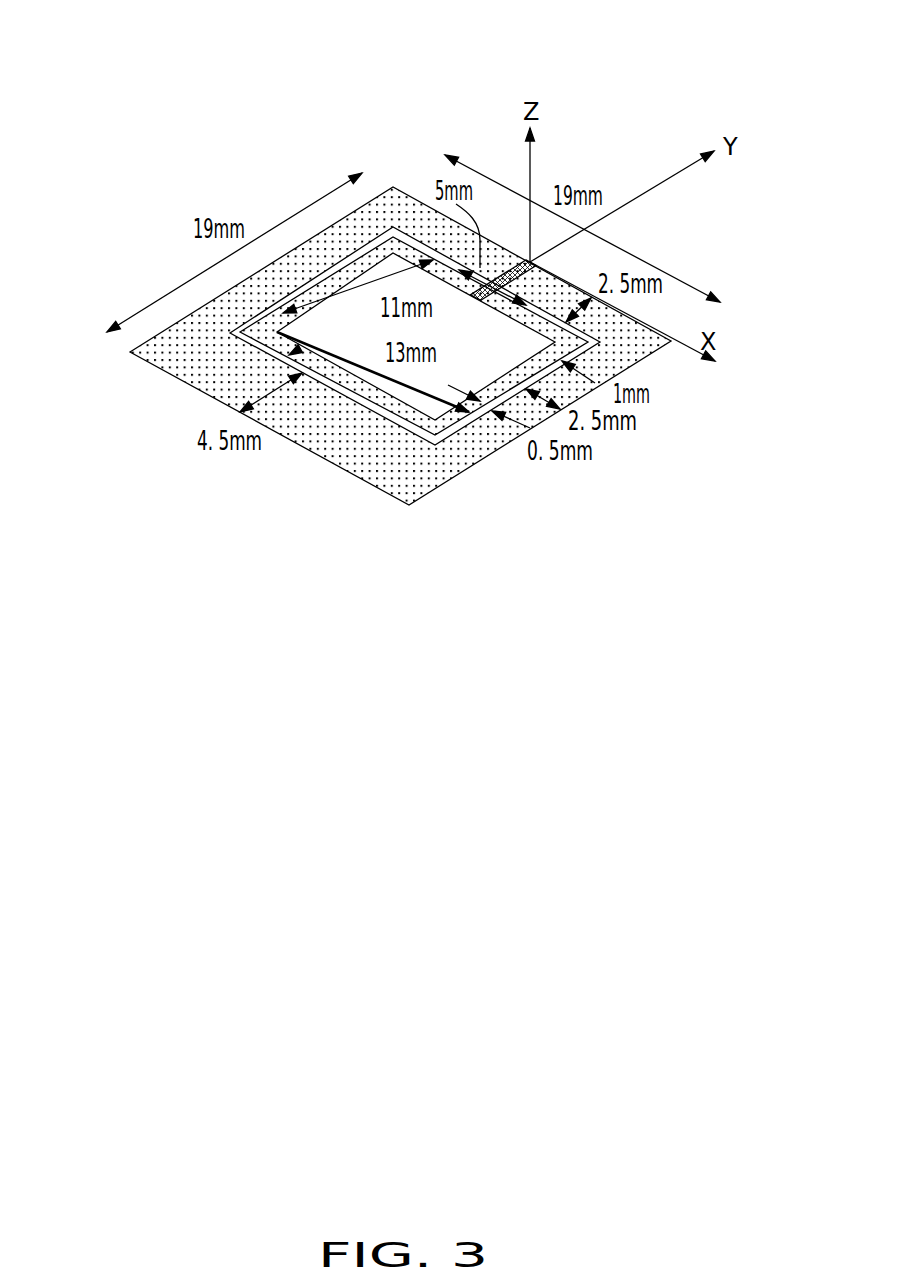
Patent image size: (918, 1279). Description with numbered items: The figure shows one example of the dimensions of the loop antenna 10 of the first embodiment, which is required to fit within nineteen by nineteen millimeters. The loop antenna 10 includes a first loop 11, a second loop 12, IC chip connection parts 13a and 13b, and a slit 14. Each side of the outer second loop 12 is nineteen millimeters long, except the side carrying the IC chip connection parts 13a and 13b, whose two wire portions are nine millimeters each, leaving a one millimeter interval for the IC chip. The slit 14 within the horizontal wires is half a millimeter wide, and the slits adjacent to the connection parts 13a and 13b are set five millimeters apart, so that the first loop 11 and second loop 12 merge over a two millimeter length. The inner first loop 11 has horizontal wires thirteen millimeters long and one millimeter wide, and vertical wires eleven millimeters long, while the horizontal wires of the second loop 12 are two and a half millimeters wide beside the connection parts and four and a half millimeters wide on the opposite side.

The loop antenna 10 is at (400, 277).
The first loop 11 is at (415, 418).
The second loop 12 is at (430, 478).
The IC chip connection part 13a is at (527, 278).
The IC chip connection part 13b is at (510, 268).
The slit 14 is at (372, 408).